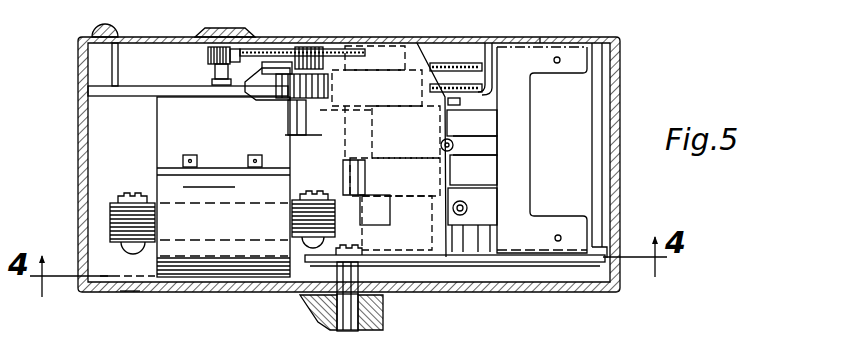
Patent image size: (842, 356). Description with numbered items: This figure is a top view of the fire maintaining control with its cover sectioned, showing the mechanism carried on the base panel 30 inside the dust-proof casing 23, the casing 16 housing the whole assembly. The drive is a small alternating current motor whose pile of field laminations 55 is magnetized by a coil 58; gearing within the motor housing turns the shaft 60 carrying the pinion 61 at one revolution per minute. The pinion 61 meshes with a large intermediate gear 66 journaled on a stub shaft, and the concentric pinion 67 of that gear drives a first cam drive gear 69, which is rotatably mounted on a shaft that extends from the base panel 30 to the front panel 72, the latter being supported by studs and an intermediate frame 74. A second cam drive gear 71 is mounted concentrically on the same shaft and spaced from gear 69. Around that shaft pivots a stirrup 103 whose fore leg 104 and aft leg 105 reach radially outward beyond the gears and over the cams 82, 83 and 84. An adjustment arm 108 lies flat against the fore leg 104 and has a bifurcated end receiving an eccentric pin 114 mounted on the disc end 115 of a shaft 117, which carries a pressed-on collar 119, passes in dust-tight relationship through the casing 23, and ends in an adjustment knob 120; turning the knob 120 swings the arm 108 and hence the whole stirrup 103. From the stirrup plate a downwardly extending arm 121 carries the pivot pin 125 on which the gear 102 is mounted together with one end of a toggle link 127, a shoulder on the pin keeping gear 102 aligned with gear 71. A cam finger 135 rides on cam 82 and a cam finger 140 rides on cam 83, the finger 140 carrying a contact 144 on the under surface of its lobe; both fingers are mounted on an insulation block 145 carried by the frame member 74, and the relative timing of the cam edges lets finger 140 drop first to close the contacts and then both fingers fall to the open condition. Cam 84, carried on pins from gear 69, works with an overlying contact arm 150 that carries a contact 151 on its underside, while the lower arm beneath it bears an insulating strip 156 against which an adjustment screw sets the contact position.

The housing 16 is at (614, 200).
The dust-proof casing 23 is at (131, 293).
The base panel 30 is at (541, 36).
The field laminations 55 is at (120, 214).
The coil 58 is at (222, 264).
The shaft 60 is at (214, 82).
The pinion 61 is at (207, 53).
The intermediate gear 66 is at (256, 48).
The pinion 67 is at (306, 48).
The cam drive gear 69 is at (470, 62).
The cam drive gear 71 is at (489, 42).
The front panel 72 is at (552, 265).
The intermediate frame 74 is at (578, 61).
The cam 82 is at (462, 102).
The cam 83 is at (342, 173).
The cam 84 is at (372, 210).
The gear 102 is at (288, 104).
The stirrup 103 is at (428, 48).
The fore leg 104 is at (420, 255).
The aft leg 105 is at (400, 44).
The adjustment arm 108 is at (374, 250).
The eccentric pin 114 is at (358, 246).
The disc end 115 is at (292, 252).
The shaft 117 is at (342, 303).
The collar 119 is at (333, 266).
The adjustment knob 120 is at (384, 326).
The downwardly extending arm 121 is at (282, 176).
The pivot pin 125 is at (288, 130).
The toggle link 127 is at (264, 101).
The cam finger 135 is at (478, 121).
The cam finger 140 is at (482, 171).
The contact 144 is at (456, 147).
The insulation block 145 is at (580, 97).
The contact arm 150 is at (512, 205).
The contact 151 is at (468, 210).
The insulating strip 156 is at (488, 228).